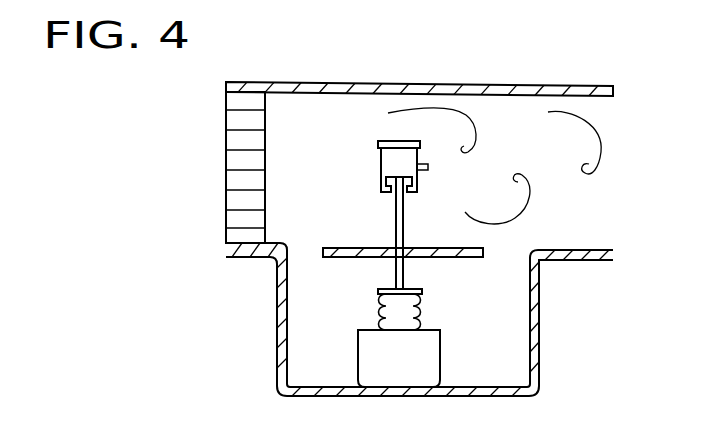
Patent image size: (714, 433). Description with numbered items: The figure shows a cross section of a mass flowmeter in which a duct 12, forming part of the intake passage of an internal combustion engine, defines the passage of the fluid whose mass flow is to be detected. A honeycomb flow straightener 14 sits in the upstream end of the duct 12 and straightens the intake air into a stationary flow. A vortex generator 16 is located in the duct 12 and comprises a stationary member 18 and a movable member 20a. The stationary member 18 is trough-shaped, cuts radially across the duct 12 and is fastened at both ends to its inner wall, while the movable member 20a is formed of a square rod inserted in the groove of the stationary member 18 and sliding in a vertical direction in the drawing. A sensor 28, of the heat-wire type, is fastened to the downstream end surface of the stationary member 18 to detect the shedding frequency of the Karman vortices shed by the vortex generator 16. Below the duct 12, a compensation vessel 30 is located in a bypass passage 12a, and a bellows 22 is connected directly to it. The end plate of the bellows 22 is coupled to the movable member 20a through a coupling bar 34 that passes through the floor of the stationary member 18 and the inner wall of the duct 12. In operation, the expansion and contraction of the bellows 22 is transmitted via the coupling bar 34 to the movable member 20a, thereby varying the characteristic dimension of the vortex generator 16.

The duct 12 is at (500, 85).
The bypass passage 12a is at (292, 305).
The honeycomb flow straightener 14 is at (252, 100).
The vortex generator 16 is at (376, 185).
The stationary member 18 is at (378, 166).
The movable member 20a is at (405, 141).
The bellows 22 is at (423, 306).
The sensor 28 is at (429, 171).
The compensation vessel 30 is at (440, 352).
The coupling bar 34 is at (404, 222).